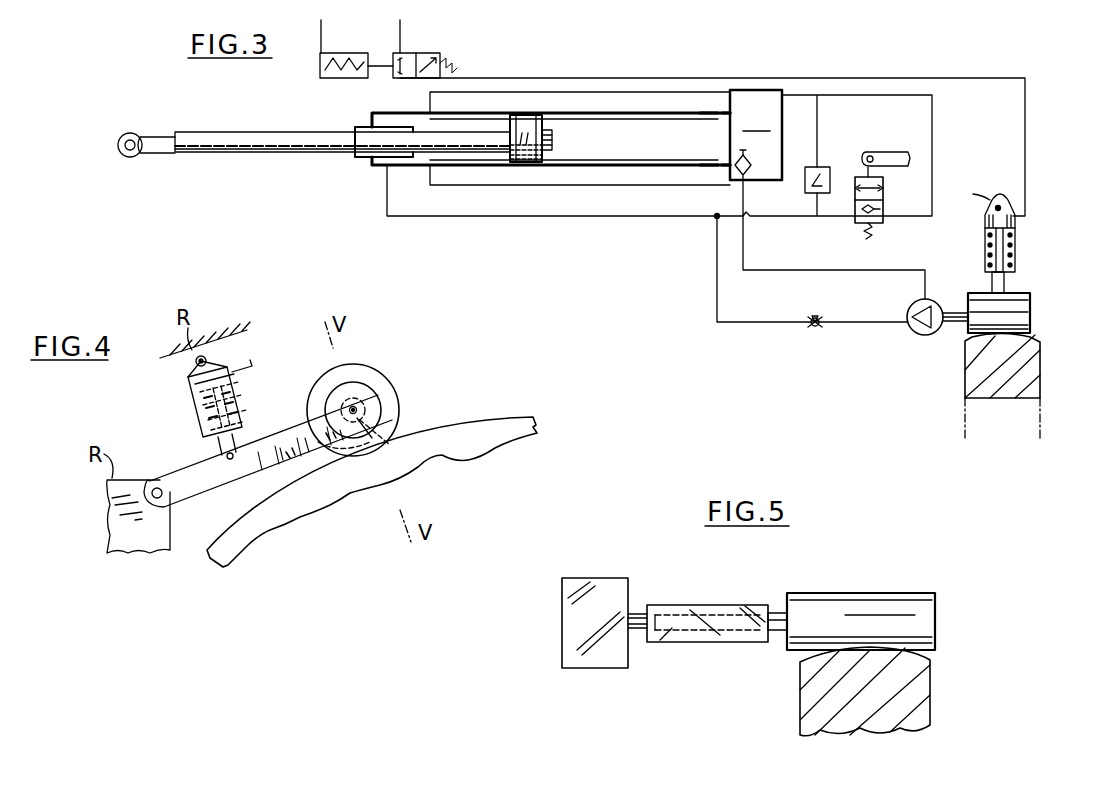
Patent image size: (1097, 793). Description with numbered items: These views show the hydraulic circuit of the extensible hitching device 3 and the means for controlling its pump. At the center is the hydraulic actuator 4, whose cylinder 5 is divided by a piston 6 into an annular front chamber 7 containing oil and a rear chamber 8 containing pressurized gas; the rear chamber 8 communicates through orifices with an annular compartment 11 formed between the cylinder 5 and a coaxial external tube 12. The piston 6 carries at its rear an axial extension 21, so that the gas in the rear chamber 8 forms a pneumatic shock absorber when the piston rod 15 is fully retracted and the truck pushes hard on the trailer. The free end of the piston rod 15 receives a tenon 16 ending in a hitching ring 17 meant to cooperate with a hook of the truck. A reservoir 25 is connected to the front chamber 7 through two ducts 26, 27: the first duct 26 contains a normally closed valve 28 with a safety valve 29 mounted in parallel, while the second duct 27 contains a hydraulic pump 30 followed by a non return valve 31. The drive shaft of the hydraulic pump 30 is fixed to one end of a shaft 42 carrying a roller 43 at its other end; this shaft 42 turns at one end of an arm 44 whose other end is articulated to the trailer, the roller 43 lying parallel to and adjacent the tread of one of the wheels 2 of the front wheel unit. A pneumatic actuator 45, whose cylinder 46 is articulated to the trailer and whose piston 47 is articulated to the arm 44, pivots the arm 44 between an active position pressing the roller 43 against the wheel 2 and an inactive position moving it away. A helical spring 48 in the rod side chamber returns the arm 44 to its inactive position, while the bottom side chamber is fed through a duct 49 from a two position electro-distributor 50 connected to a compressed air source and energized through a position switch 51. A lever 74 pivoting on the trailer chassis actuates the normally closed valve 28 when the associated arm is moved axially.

In FIG. 3, the wheels 2 is at (965, 420).
In FIG. 4, the wheels 2 is at (300, 516).
In FIG. 5, the wheels 2 is at (920, 700).
In FIG. 3, the hitching device 3 is at (664, 92).
In FIG. 3, the hydraulic actuator 4 is at (568, 167).
In FIG. 3, the cylinder 5 is at (644, 166).
In FIG. 3, the piston 6 is at (530, 168).
In FIG. 3, the annular front chamber 7 is at (480, 168).
In FIG. 3, the rear chamber 8 is at (612, 155).
In FIG. 3, the annular compartment 11 is at (668, 170).
In FIG. 3, the external tube 12 is at (704, 182).
In FIG. 3, the piston rod 15 is at (270, 153).
In FIG. 3, the tenon 16 is at (162, 137).
In FIG. 3, the hitching ring 17 is at (131, 133).
In FIG. 3, the axial extension 21 is at (553, 136).
In FIG. 3, the reservoir 25 is at (756, 135).
In FIG. 3, the first duct 26 is at (932, 155).
In FIG. 3, the second duct 27 is at (868, 260).
In FIG. 3, the normally closed valve 28 is at (852, 213).
In FIG. 3, the safety valve 29 is at (805, 185).
In FIG. 3, the hydraulic pump 30 is at (930, 334).
In FIG. 4, the hydraulic pump 30 is at (365, 377).
In FIG. 5, the hydraulic pump 30 is at (605, 590).
In FIG. 3, the non return valve 31 is at (816, 329).
In FIG. 4, the shaft 42 is at (372, 430).
In FIG. 5, the shaft 42 is at (778, 612).
In FIG. 3, the roller 43 is at (1032, 315).
In FIG. 4, the roller 43 is at (378, 408).
In FIG. 5, the roller 43 is at (908, 598).
In FIG. 4, the arm 44 is at (218, 478).
In FIG. 5, the arm 44 is at (728, 605).
In FIG. 3, the pneumatic actuator 45 is at (1016, 251).
In FIG. 4, the pneumatic actuator 45 is at (232, 402).
In FIG. 3, the cylinder 46 is at (1016, 222).
In FIG. 4, the cylinder 46 is at (190, 395).
In FIG. 3, the piston 47 is at (1005, 285).
In FIG. 4, the piston 47 is at (216, 449).
In FIG. 3, the helical spring 48 is at (985, 247).
In FIG. 4, the helical spring 48 is at (200, 415).
In FIG. 3, the duct 49 is at (915, 78).
In FIG. 3, the two position electro-distributor 50 is at (432, 53).
In FIG. 3, the position switch 51 is at (322, 50).
In FIG. 3, the lever 74 is at (890, 150).